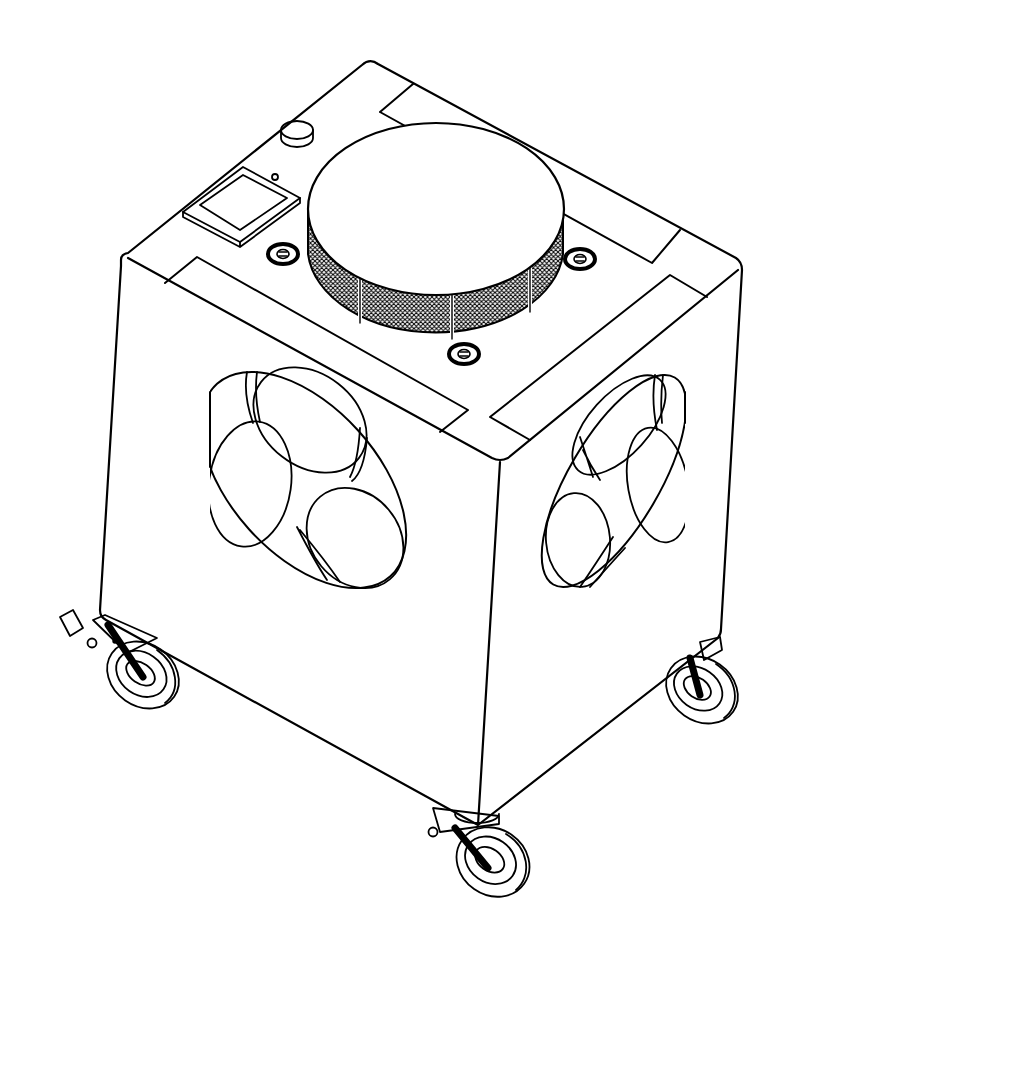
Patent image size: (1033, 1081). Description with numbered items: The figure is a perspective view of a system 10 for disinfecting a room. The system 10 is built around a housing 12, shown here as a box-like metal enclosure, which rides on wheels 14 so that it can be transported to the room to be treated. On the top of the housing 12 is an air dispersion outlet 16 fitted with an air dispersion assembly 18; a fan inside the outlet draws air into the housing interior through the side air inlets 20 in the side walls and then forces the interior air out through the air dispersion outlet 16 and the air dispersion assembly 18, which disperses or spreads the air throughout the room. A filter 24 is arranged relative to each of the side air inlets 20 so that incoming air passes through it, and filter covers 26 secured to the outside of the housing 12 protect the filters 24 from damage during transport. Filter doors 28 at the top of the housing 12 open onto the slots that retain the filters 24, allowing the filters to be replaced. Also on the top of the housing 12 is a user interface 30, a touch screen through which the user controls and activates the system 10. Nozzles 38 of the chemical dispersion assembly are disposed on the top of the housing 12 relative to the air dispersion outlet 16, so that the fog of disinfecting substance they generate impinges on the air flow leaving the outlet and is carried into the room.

The system 10 is at (627, 85).
The housing 12 is at (742, 305).
The wheels 14 is at (123, 693).
The air dispersion outlet 16 is at (565, 178).
The air dispersion assembly 18 is at (437, 150).
The side air inlets 20 is at (242, 467).
The filter 24 is at (235, 497).
The filter covers 26 is at (137, 380).
The filter doors 28 is at (284, 332).
The user interface 30 is at (232, 197).
The nozzles 38 is at (287, 245).